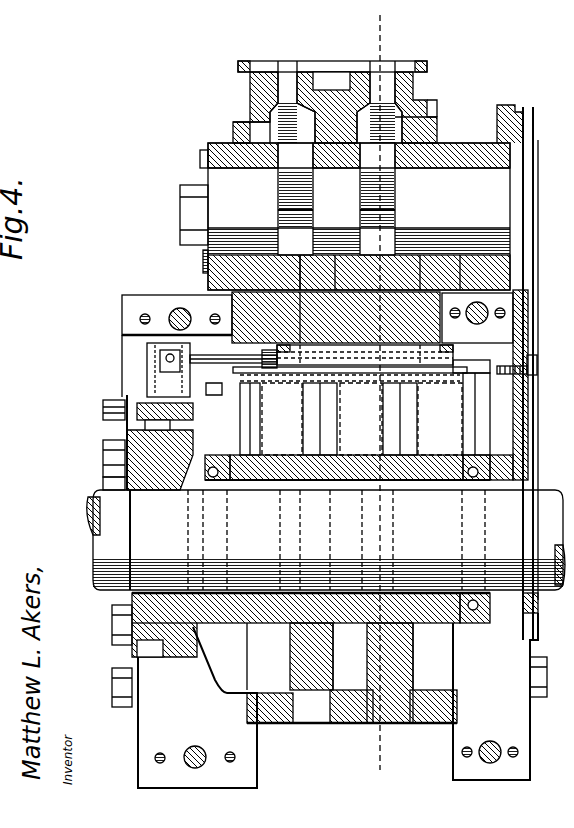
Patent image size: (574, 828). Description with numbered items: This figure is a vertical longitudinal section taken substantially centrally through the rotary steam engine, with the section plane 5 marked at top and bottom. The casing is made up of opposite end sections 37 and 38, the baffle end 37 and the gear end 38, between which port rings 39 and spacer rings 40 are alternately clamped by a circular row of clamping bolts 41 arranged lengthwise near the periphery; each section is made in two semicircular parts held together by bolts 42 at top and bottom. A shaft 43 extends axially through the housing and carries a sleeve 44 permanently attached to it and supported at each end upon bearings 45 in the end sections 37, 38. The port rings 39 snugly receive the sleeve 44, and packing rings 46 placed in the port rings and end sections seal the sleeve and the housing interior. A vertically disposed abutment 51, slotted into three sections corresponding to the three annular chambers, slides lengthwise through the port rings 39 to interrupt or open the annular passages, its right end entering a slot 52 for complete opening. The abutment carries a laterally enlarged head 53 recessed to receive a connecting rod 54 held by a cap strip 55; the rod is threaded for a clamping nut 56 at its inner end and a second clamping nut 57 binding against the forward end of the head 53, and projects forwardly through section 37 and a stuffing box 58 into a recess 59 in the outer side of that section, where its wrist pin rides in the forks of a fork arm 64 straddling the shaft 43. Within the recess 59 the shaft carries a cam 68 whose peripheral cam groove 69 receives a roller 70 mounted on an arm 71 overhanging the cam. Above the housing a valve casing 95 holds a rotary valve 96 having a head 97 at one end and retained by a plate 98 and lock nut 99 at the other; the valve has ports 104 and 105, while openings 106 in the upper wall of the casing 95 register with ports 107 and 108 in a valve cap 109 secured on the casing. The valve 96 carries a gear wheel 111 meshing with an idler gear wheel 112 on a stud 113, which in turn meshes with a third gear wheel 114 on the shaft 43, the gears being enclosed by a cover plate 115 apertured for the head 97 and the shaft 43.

The section line 5 is at (383, 392).
The end section 37 is at (130, 318).
The end section 38 is at (508, 648).
The port ring 39 is at (350, 322).
The spacer ring 40 is at (240, 306).
The clamping bolt 41 is at (118, 685).
The bolt 42 is at (480, 310).
The shaft 43 is at (520, 500).
The sleeve 44 is at (450, 458).
The bearing 45 is at (490, 475).
The packing ring 46 is at (455, 626).
The abutment 51 is at (362, 419).
The slot 52 is at (480, 408).
The head 53 is at (425, 360).
The connecting rod 54 is at (233, 368).
The cap strip 55 is at (365, 355).
The clamping nut 56 is at (470, 362).
The clamping nut 57 is at (255, 419).
The stuffing box 58 is at (222, 375).
The recess 59 is at (132, 353).
The fork arm 64 is at (185, 430).
The cam 68 is at (140, 488).
The cam groove 69 is at (150, 452).
The roller 70 is at (130, 433).
The arm 71 is at (130, 413).
The valve casing 95 is at (462, 152).
The rotary valve 96 is at (518, 183).
The head 97 is at (533, 216).
The plate 98 is at (204, 153).
The lock nut 99 is at (186, 186).
The port 104 is at (381, 236).
The port 105 is at (290, 237).
The opening 106 is at (287, 147).
The port 107 is at (390, 66).
The port 108 is at (287, 72).
The valve cap 109 is at (428, 102).
The gear wheel 111 is at (530, 133).
The idler gear wheel 112 is at (538, 282).
The stud 113 is at (530, 371).
The gear wheel 114 is at (538, 604).
The cover plate 115 is at (536, 362).